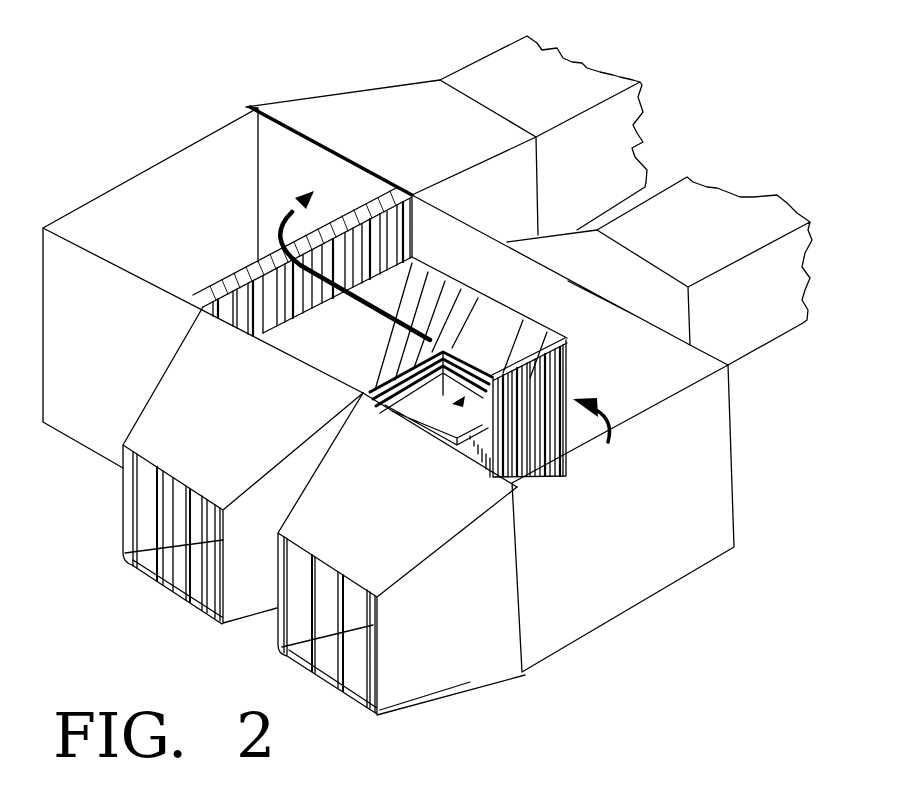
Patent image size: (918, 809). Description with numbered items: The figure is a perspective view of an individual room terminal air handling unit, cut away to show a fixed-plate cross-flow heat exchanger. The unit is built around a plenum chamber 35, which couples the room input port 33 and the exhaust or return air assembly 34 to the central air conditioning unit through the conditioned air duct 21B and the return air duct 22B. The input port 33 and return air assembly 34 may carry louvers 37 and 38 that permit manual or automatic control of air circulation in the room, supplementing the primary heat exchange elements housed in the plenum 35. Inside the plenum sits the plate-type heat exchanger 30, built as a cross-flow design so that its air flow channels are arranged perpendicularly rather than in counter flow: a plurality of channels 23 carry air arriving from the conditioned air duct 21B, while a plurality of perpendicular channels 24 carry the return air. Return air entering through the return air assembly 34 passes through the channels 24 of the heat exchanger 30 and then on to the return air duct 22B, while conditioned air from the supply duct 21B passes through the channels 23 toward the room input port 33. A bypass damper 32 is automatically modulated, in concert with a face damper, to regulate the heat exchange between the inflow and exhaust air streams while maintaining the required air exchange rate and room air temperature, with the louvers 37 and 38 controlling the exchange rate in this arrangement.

The plate-type heat exchanger 30 is at (333, 337).
The bypass damper 32 is at (360, 212).
The return air duct 22B is at (560, 95).
The conditioned air duct 21B is at (713, 243).
The room input port 33 is at (245, 442).
The return air assembly 34 is at (402, 522).
The plenum chamber 35 is at (630, 558).
The louver 37 is at (162, 580).
The louver 38 is at (343, 670).
The channels 23 is at (480, 430).
The perpendicular channels 24 is at (455, 430).